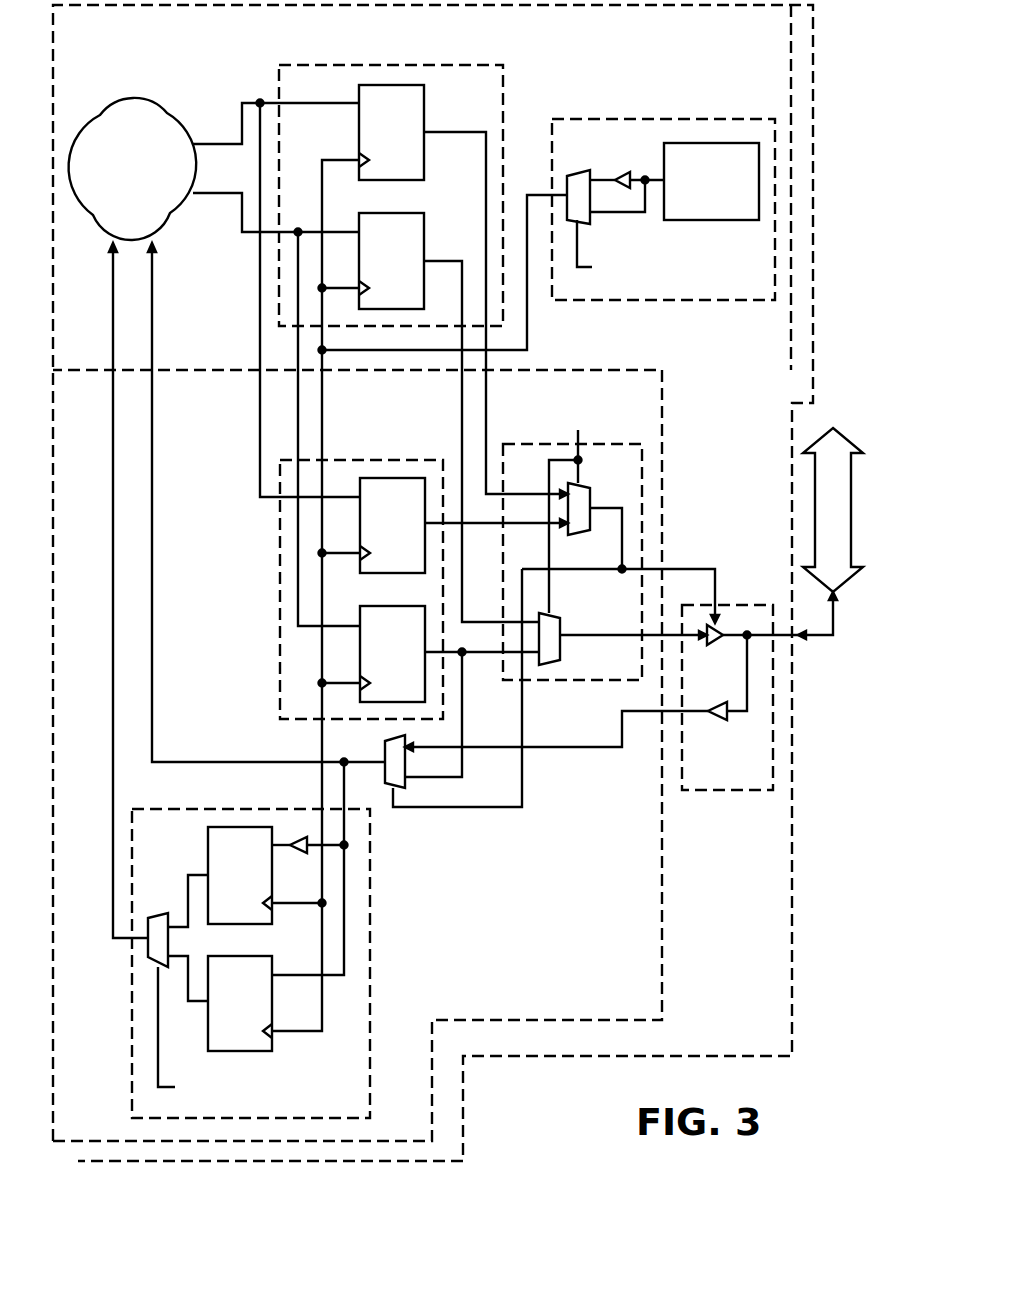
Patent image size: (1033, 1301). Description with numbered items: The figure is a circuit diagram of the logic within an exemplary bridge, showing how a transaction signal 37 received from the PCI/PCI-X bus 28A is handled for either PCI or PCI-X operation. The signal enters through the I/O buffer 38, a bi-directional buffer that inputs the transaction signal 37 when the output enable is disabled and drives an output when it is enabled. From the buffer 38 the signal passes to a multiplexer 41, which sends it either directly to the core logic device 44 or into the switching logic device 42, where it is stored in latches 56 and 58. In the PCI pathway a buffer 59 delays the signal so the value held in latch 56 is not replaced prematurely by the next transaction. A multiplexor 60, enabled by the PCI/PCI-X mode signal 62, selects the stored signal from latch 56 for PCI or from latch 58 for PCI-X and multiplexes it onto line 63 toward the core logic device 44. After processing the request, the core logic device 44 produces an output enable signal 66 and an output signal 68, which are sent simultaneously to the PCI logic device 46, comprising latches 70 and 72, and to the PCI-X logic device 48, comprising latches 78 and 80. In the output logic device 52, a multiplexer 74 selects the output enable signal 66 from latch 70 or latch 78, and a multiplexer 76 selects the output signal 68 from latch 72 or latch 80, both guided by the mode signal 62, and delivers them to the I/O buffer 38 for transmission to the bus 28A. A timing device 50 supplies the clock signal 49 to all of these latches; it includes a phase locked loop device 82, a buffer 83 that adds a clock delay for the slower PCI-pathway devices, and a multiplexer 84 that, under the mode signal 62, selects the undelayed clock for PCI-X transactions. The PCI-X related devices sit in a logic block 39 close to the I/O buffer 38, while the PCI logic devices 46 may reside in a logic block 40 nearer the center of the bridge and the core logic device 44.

The logic block 40 is at (780, 28).
The core logic device 44 is at (133, 99).
The PCI logic device 46 is at (503, 70).
The PCI-X logic device 48 is at (288, 468).
The timing device 50 is at (750, 119).
The output logic device 52 is at (642, 488).
The latch 56 is at (210, 850).
The latch 58 is at (250, 956).
The multiplexor 60 is at (150, 950).
The PCI/PCI-X mode signal 62 is at (580, 432).
The line 63 is at (113, 768).
The output enable signal 66 is at (207, 142).
The output signal 68 is at (215, 197).
The latch 70 is at (385, 85).
The latch 72 is at (410, 213).
The multiplexer 74 is at (578, 535).
The multiplexer 76 is at (550, 665).
The latch 78 is at (400, 478).
The latch 80 is at (375, 606).
The phase locked loop device 82 is at (707, 143).
The buffer 83 is at (622, 172).
The multiplexer 84 is at (575, 170).
The clock signal 49 is at (538, 194).
The multiplexer 41 is at (398, 790).
The switching logic device 42 is at (360, 1015).
The transaction signal 37 is at (645, 715).
The I/O buffer 38 is at (745, 605).
The logic block 39 is at (657, 443).
The buffer 59 is at (303, 852).
The PCI/PCI-X bus 28A is at (815, 500).